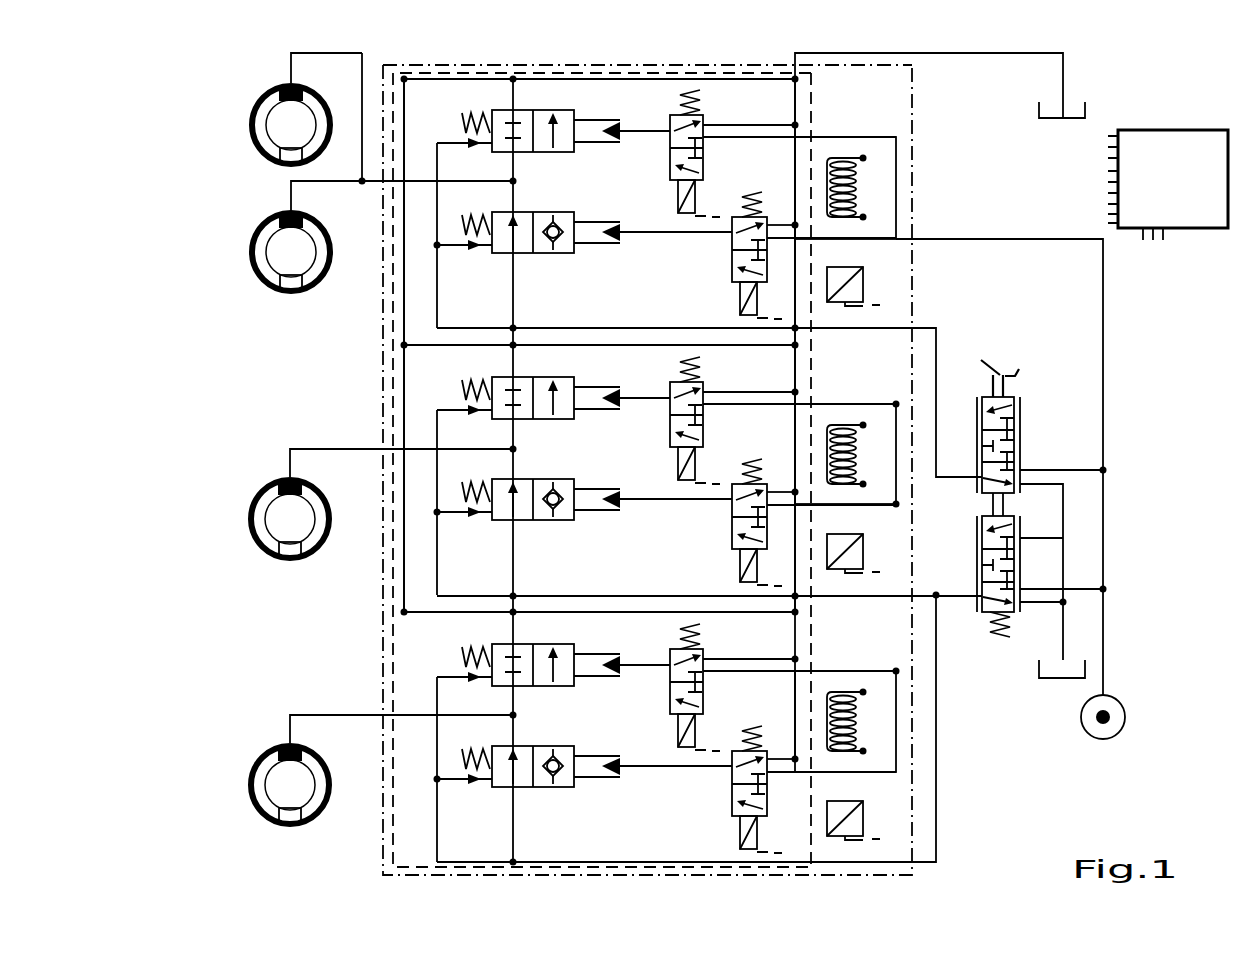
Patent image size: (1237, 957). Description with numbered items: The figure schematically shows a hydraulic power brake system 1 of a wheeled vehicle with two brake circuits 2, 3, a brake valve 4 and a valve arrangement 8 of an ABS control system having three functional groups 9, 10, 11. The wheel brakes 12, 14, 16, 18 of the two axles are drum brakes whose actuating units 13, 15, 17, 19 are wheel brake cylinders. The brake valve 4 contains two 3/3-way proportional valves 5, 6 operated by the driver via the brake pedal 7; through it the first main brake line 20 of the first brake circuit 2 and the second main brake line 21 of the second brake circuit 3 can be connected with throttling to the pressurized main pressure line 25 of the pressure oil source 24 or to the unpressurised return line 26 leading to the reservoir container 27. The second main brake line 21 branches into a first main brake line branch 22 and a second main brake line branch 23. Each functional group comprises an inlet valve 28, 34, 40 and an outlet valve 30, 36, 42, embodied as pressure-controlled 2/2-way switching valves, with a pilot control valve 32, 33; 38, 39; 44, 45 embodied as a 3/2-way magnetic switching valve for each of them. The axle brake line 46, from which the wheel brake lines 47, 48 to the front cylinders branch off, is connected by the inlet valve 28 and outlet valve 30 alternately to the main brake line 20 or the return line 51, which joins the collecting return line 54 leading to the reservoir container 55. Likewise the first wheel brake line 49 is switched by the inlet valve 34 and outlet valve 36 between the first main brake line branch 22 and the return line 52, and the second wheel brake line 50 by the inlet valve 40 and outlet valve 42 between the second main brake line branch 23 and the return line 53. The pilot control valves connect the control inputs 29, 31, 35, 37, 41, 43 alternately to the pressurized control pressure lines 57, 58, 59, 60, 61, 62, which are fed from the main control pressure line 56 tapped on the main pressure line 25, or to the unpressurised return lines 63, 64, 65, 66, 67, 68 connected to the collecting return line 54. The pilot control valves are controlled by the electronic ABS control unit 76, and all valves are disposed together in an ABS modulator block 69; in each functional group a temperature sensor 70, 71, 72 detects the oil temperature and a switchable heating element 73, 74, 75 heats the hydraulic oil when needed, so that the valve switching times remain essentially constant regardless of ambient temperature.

The hydraulic power brake system 1 is at (1097, 781).
The first brake circuit 2 is at (282, 316).
The second brake circuit 3 is at (280, 595).
The brake valve 4 is at (1067, 479).
The 3/3-way proportional valve 5 is at (1022, 449).
The 3/3-way proportional valve 6 is at (1022, 565).
The brake pedal 7 is at (998, 373).
The valve arrangement 8 is at (813, 108).
The first functional group 9 is at (621, 191).
The second functional group 10 is at (628, 459).
The third functional group 11 is at (628, 726).
The wheel brake 12 is at (250, 124).
The actuating unit 13 is at (288, 83).
The wheel brake 14 is at (250, 252).
The actuating unit 15 is at (288, 211).
The wheel brake 16 is at (250, 519).
The actuating unit 17 is at (288, 477).
The wheel brake 18 is at (250, 785).
The actuating unit 19 is at (288, 743).
The first main brake line 20 is at (939, 358).
The second main brake line 21 is at (958, 597).
The first main brake line branch 22 is at (603, 596).
The second main brake line branch 23 is at (938, 822).
The pressure oil source 24 is at (1127, 716).
The main pressure line 25 is at (1105, 520).
The return line 26 is at (1065, 539).
The reservoir container 27 is at (1062, 682).
The inlet valve 28 is at (522, 254).
The control input 29 is at (593, 222).
The outlet valve 30 is at (522, 153).
The control input 31 is at (593, 121).
The pilot control valve 32 is at (732, 258).
The pilot control valve 33 is at (705, 170).
The inlet valve 34 is at (541, 521).
The control input 35 is at (662, 479).
The outlet valve 36 is at (541, 420).
The control input 37 is at (631, 379).
The pilot control valve 38 is at (732, 522).
The pilot control valve 39 is at (714, 420).
The inlet valve 40 is at (541, 788).
The control input 41 is at (662, 746).
The outlet valve 42 is at (541, 687).
The control input 43 is at (631, 646).
The pilot control valve 44 is at (732, 789).
The pilot control valve 45 is at (714, 687).
The axle brake line 46 is at (373, 185).
The wheel brake line 47 is at (370, 63).
The wheel brake line 48 is at (353, 178).
The first wheel brake line 49 is at (366, 451).
The second wheel brake line 50 is at (366, 719).
The return line 51 is at (553, 74).
The return line 52 is at (658, 345).
The return line 53 is at (660, 612).
The collecting return line 54 is at (985, 53).
The reservoir container 55 is at (1093, 108).
The main control pressure line 56 is at (1105, 353).
The control pressure line 57 is at (897, 168).
The control pressure line 58 is at (858, 240).
The control pressure line 59 is at (845, 417).
The control pressure line 60 is at (865, 521).
The control pressure line 61 is at (845, 683).
The control pressure line 62 is at (899, 749).
The return line 63 is at (757, 125).
The return line 64 is at (785, 223).
The return line 65 is at (748, 392).
The return line 66 is at (779, 452).
The return line 67 is at (748, 659).
The return line 68 is at (779, 719).
The ABS modulator block 69 is at (378, 369).
The temperature sensor 70 is at (866, 283).
The temperature sensor 71 is at (895, 551).
The temperature sensor 72 is at (865, 825).
The heating element 73 is at (861, 188).
The heating element 74 is at (861, 455).
The heating element 75 is at (861, 722).
The electronic ABS control unit 76 is at (1159, 209).